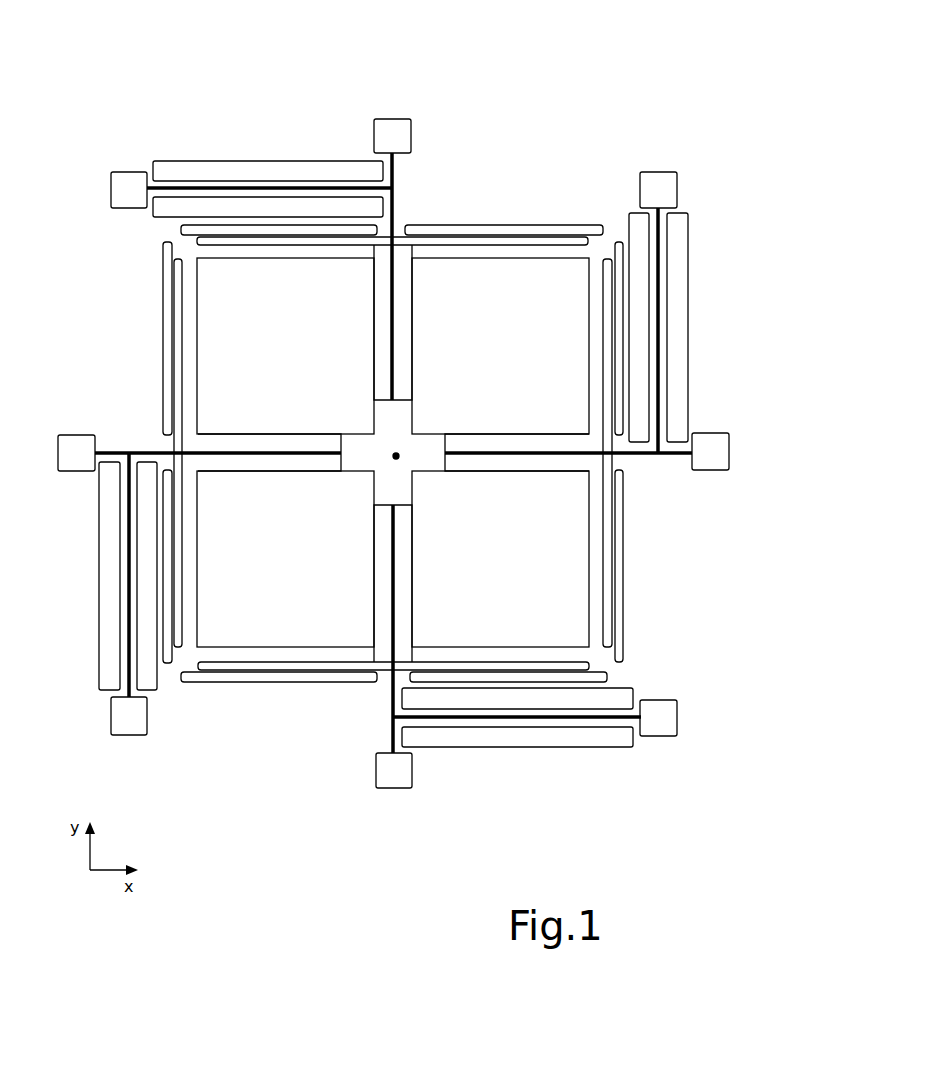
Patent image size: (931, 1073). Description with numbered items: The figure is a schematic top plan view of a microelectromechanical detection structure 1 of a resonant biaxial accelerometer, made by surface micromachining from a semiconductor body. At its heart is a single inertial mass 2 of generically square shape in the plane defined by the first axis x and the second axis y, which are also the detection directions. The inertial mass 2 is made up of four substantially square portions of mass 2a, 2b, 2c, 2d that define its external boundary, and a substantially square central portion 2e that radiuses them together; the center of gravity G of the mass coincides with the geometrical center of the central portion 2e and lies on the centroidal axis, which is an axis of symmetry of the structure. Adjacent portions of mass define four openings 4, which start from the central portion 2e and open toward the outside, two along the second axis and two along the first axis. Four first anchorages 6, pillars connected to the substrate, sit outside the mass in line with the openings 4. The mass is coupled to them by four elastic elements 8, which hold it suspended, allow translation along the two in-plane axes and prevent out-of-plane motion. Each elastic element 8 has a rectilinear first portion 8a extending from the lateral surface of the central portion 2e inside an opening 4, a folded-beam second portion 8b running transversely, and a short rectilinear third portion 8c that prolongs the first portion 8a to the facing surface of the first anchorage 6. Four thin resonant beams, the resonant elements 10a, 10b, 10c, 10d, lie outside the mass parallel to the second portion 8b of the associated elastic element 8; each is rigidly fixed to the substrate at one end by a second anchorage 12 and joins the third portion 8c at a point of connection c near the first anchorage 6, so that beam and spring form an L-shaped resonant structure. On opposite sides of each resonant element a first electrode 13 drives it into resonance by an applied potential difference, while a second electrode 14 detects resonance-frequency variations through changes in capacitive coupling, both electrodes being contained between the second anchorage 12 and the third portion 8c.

The microelectromechanical detection structure 1 is at (570, 154).
The inertial mass 2 is at (578, 256).
The portion of mass 2a is at (285, 346).
The portion of mass 2b is at (500, 346).
The portion of mass 2c is at (500, 559).
The portion of mass 2d is at (285, 559).
The central portion 2e is at (390, 428).
The opening 4 is at (407, 338).
The first anchorage 6 is at (395, 118).
The elastic element 8 is at (398, 211).
The first portion 8a is at (392, 352).
The second portion 8b is at (523, 224).
The third portion 8c is at (395, 174).
The resonant element 10a is at (212, 186).
The resonant element 10b is at (655, 266).
The resonant element 10c is at (544, 718).
The resonant element 10d is at (128, 576).
The second anchorage 12 is at (124, 184).
The first electrode 13 is at (308, 172).
The second electrode 14 is at (163, 212).
The point of connection c is at (395, 188).
The center of gravity G is at (402, 465).